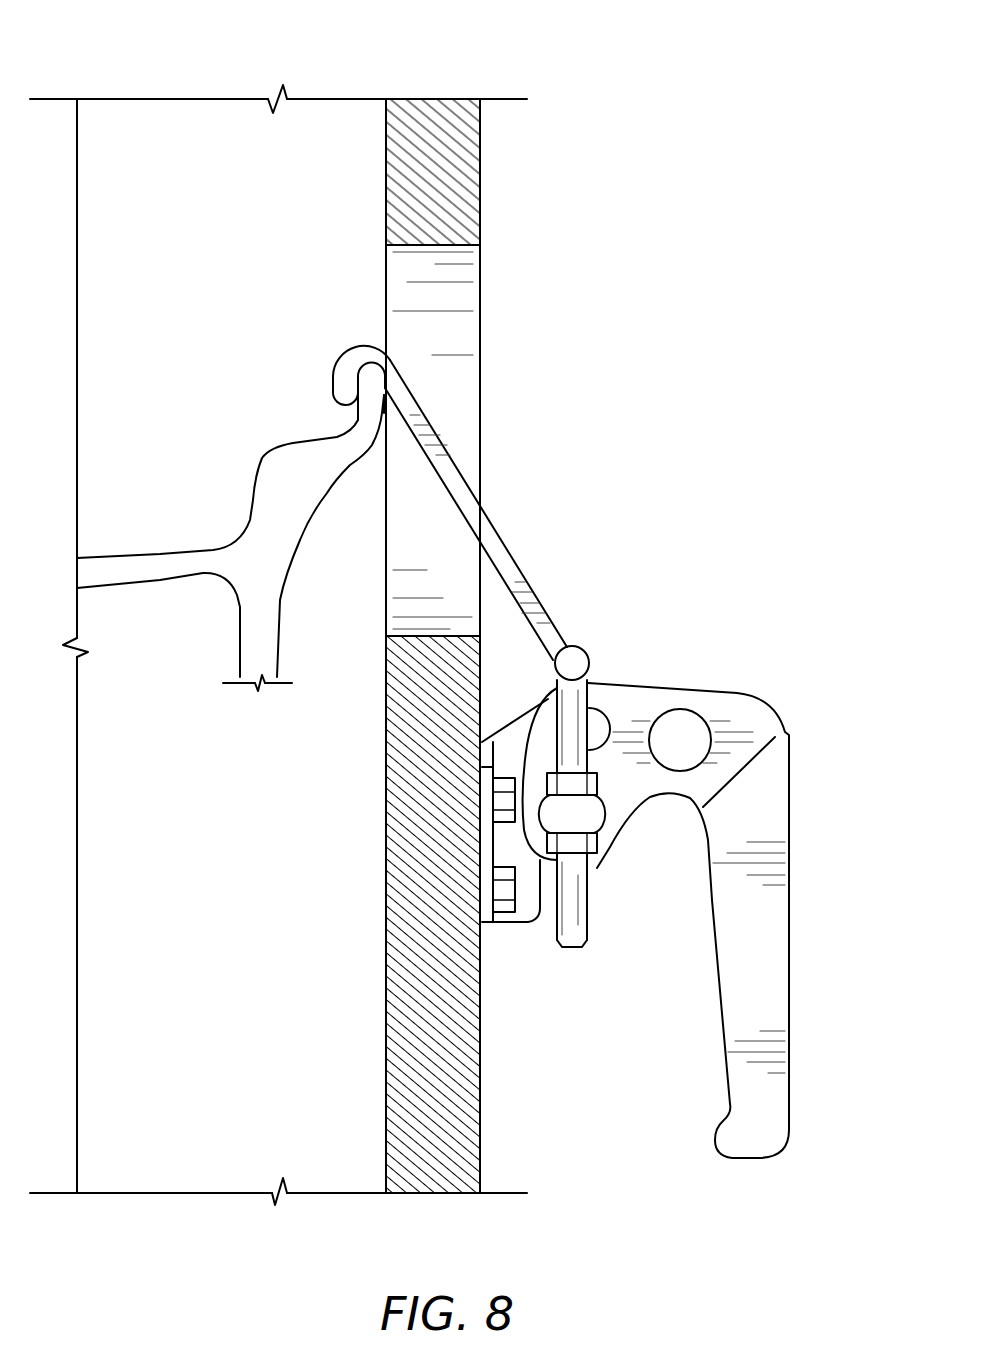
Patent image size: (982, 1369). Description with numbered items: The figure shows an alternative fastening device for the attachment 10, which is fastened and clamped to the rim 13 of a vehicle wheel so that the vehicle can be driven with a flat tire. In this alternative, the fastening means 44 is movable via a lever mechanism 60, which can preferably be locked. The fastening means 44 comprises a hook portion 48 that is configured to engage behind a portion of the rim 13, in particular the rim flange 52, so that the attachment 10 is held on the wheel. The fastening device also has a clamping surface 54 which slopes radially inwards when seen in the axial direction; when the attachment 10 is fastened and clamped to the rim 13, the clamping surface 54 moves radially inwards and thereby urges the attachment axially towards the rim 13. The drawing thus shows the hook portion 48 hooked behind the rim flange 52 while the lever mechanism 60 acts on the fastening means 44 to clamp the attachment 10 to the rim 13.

The attachment 10 is at (633, 123).
The rim 13 is at (263, 580).
The fastening means 44 is at (415, 404).
The hook portion 48 is at (348, 383).
The rim flange 52 is at (362, 425).
The clamping surface 54 is at (397, 378).
The lever mechanism 60 is at (750, 682).